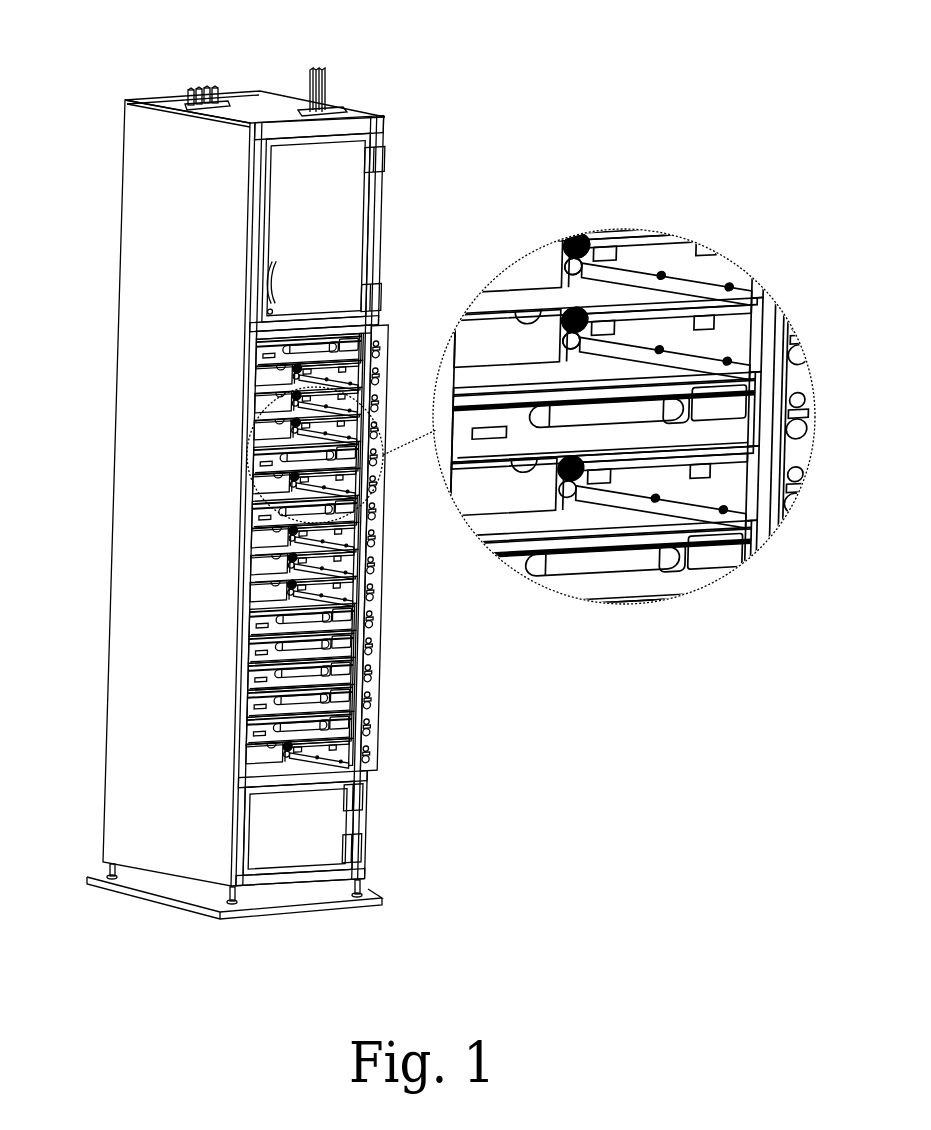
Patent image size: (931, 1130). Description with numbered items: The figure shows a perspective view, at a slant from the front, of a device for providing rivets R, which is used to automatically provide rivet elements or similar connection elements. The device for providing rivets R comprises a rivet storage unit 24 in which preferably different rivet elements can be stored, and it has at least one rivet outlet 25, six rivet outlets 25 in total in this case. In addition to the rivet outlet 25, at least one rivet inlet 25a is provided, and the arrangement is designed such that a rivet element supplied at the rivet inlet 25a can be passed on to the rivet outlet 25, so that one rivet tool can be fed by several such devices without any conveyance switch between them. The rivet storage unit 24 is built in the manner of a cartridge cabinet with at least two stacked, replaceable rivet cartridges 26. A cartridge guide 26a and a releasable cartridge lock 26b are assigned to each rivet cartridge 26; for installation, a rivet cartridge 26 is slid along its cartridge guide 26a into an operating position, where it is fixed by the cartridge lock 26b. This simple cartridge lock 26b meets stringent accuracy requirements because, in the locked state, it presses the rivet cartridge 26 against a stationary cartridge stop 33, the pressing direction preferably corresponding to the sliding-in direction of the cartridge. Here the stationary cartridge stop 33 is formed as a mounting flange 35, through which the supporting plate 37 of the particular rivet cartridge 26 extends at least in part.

The device for providing rivets R is at (443, 147).
The rivet storage unit 24 is at (106, 326).
The rivet outlet 25 is at (232, 57).
The rivet inlet 25a is at (345, 57).
The rivet cartridge 26 is at (530, 443).
The cartridge guide 26a is at (700, 350).
The cartridge lock 26b is at (692, 327).
The cartridge stop 33 is at (602, 237).
The mounting flange 35 is at (575, 291).
The supporting plate 37 is at (565, 280).